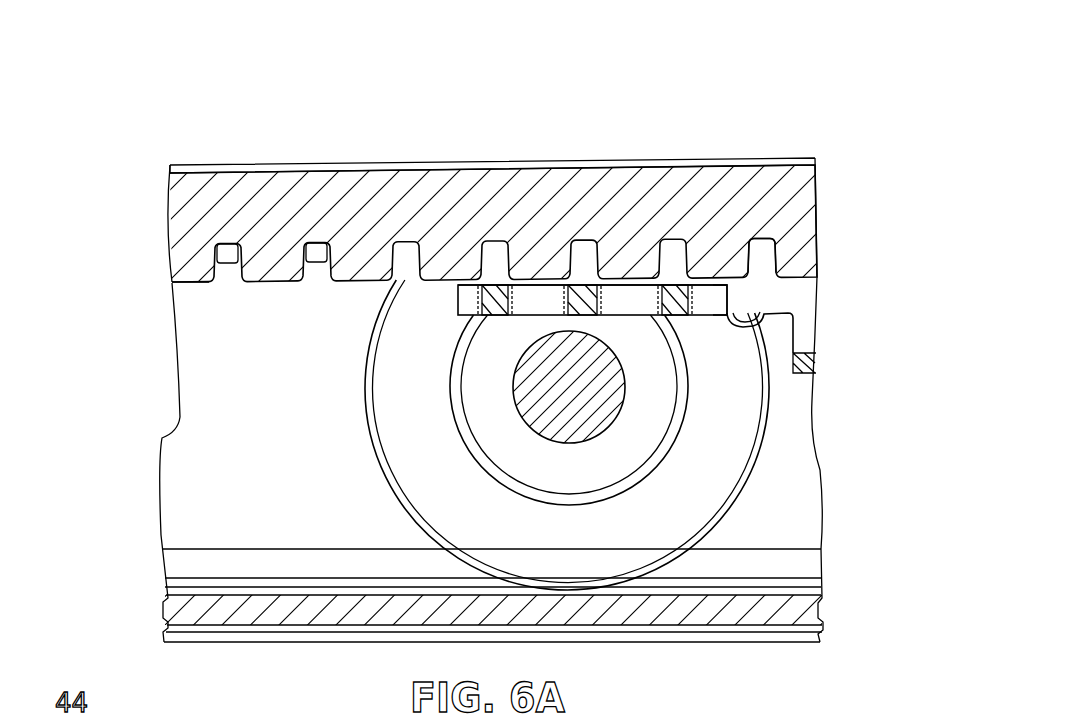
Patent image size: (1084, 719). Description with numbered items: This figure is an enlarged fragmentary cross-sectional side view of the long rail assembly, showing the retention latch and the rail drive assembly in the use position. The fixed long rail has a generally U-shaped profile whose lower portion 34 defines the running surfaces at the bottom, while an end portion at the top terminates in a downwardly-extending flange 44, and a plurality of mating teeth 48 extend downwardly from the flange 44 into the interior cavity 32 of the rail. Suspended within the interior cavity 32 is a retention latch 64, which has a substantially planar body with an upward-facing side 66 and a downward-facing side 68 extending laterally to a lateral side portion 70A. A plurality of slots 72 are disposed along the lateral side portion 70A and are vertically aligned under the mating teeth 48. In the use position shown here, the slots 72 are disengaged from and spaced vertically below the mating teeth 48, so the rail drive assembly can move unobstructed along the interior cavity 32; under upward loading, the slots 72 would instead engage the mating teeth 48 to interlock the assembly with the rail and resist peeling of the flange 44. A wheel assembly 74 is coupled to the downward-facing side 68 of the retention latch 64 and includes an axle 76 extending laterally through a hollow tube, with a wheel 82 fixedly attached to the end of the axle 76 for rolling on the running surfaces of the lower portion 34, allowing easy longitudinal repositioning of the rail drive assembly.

The flange 44 is at (167, 168).
The mating teeth 48 is at (193, 283).
The interior cavity 32 is at (300, 439).
The upward-facing side 66 is at (533, 290).
The slots 72 is at (623, 300).
The retention latch 64 is at (713, 277).
The lateral side portion 70A is at (720, 297).
The downward-facing side 68 is at (712, 320).
The axle 76 is at (617, 387).
The wheel assembly 74 is at (777, 433).
The wheel 82 is at (728, 462).
The lower portion 34 is at (792, 643).